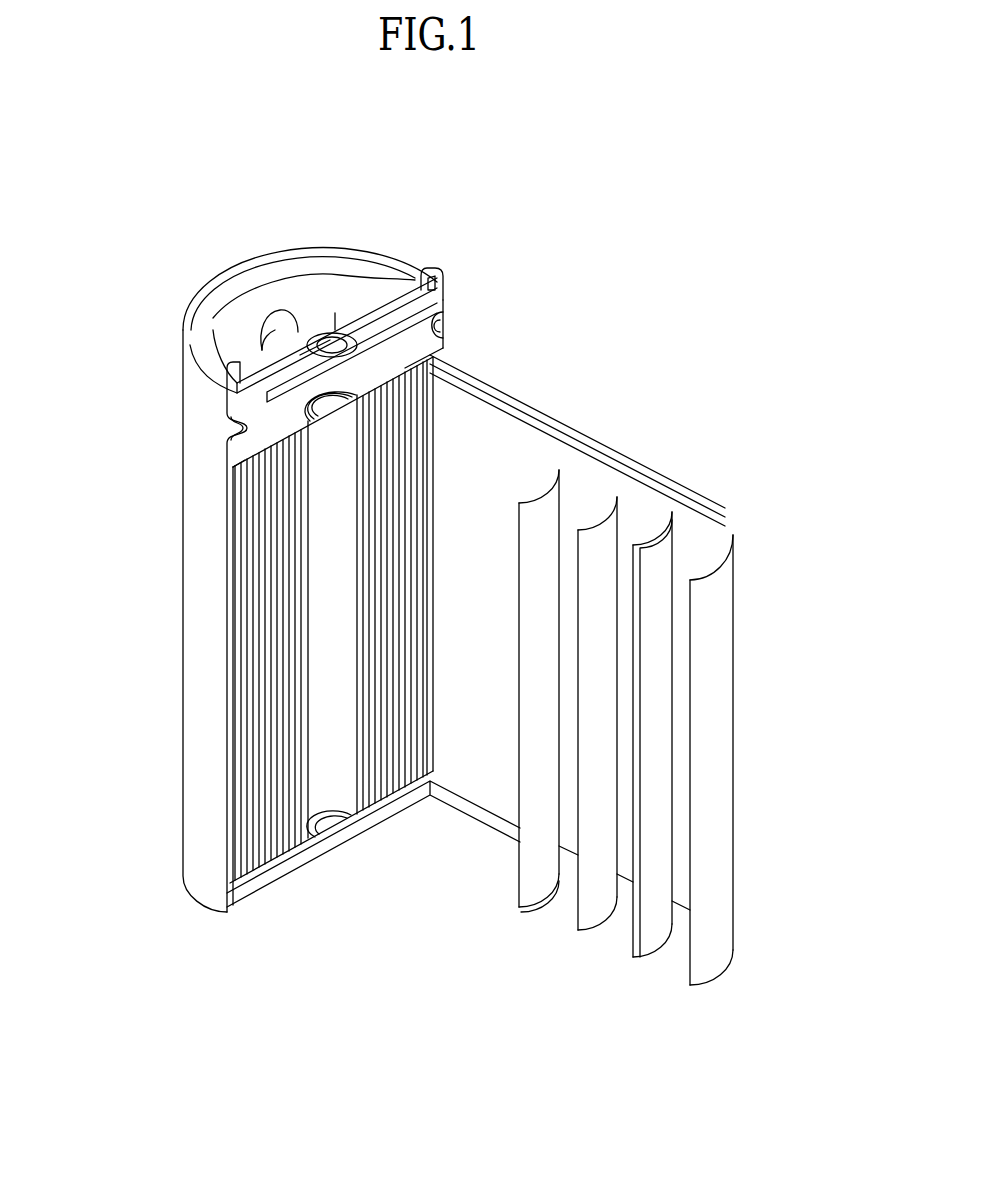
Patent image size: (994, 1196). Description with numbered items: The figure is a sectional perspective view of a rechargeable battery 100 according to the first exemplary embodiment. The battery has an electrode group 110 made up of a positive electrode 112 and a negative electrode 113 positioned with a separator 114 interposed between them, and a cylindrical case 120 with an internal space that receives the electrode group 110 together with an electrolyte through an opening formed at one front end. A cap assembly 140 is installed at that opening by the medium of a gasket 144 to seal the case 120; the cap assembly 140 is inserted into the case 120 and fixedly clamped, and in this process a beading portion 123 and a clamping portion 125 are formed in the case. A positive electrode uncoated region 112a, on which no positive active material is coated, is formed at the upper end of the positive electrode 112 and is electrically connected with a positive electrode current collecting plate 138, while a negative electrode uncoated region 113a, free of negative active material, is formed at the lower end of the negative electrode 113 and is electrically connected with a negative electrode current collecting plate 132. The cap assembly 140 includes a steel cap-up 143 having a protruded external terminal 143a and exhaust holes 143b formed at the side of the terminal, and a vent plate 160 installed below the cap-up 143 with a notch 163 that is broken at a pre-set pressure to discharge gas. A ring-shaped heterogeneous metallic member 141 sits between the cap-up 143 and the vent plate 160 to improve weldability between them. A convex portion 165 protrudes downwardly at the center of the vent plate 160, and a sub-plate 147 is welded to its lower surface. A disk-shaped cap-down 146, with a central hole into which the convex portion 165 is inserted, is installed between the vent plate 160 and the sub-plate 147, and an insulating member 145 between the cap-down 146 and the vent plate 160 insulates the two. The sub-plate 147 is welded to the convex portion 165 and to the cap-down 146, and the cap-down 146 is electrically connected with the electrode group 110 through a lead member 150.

The rechargeable battery 100 is at (358, 136).
The electrode group 110 is at (387, 797).
The positive electrode 112 is at (650, 947).
The positive electrode uncoated region 112a is at (642, 480).
The negative electrode 113 is at (523, 887).
The negative electrode uncoated region 113a is at (527, 911).
The separator 114 is at (594, 922).
The case 120 is at (187, 554).
The beading portion 123 is at (237, 422).
The clamping portion 125 is at (215, 400).
The negative electrode current collecting plate 132 is at (282, 865).
The positive electrode current collecting plate 138 is at (237, 450).
The cap assembly 140 is at (530, 350).
The heterogeneous metallic member 141 is at (380, 305).
The cap-up 143 is at (390, 283).
The external terminal 143a is at (293, 293).
The exhaust holes 143b is at (268, 323).
The gasket 144 is at (226, 388).
The insulating member 145 is at (420, 318).
The cap-down 146 is at (415, 340).
The sub-plate 147 is at (405, 352).
The lead member 150 is at (448, 365).
The vent plate 160 is at (393, 330).
The notch 163 is at (355, 307).
The convex portion 165 is at (298, 308).